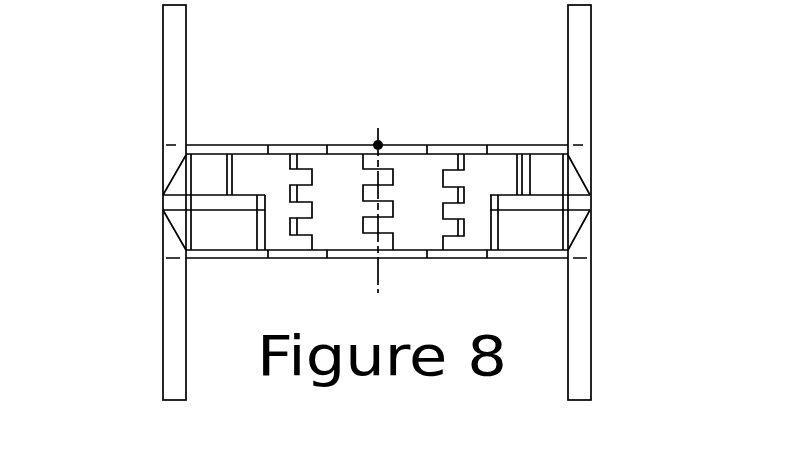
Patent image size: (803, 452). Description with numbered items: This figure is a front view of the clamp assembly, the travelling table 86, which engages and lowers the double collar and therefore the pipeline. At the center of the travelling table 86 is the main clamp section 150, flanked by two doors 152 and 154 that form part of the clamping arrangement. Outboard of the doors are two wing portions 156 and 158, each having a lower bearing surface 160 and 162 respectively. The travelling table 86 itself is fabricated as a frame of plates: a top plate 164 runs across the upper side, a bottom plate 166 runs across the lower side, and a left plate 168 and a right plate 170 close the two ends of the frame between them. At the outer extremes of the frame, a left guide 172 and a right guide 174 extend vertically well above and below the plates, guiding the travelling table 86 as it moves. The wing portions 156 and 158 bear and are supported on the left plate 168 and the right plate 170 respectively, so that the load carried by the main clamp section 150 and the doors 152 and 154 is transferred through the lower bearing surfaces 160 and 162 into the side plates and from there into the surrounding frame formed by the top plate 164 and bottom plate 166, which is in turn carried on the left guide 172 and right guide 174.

The travelling table 86 is at (619, 124).
The main clamp section 150 is at (277, 163).
The door 152 is at (339, 165).
The door 154 is at (413, 165).
The wing portion 156 is at (241, 163).
The wing portion 158 is at (500, 163).
The lower bearing surface 160 is at (260, 195).
The lower bearing surface 162 is at (565, 217).
The top plate 164 is at (203, 145).
The bottom plate 166 is at (302, 255).
The left plate 168 is at (210, 199).
The right plate 170 is at (563, 202).
The left guide 172 is at (165, 43).
The right guide 174 is at (590, 37).